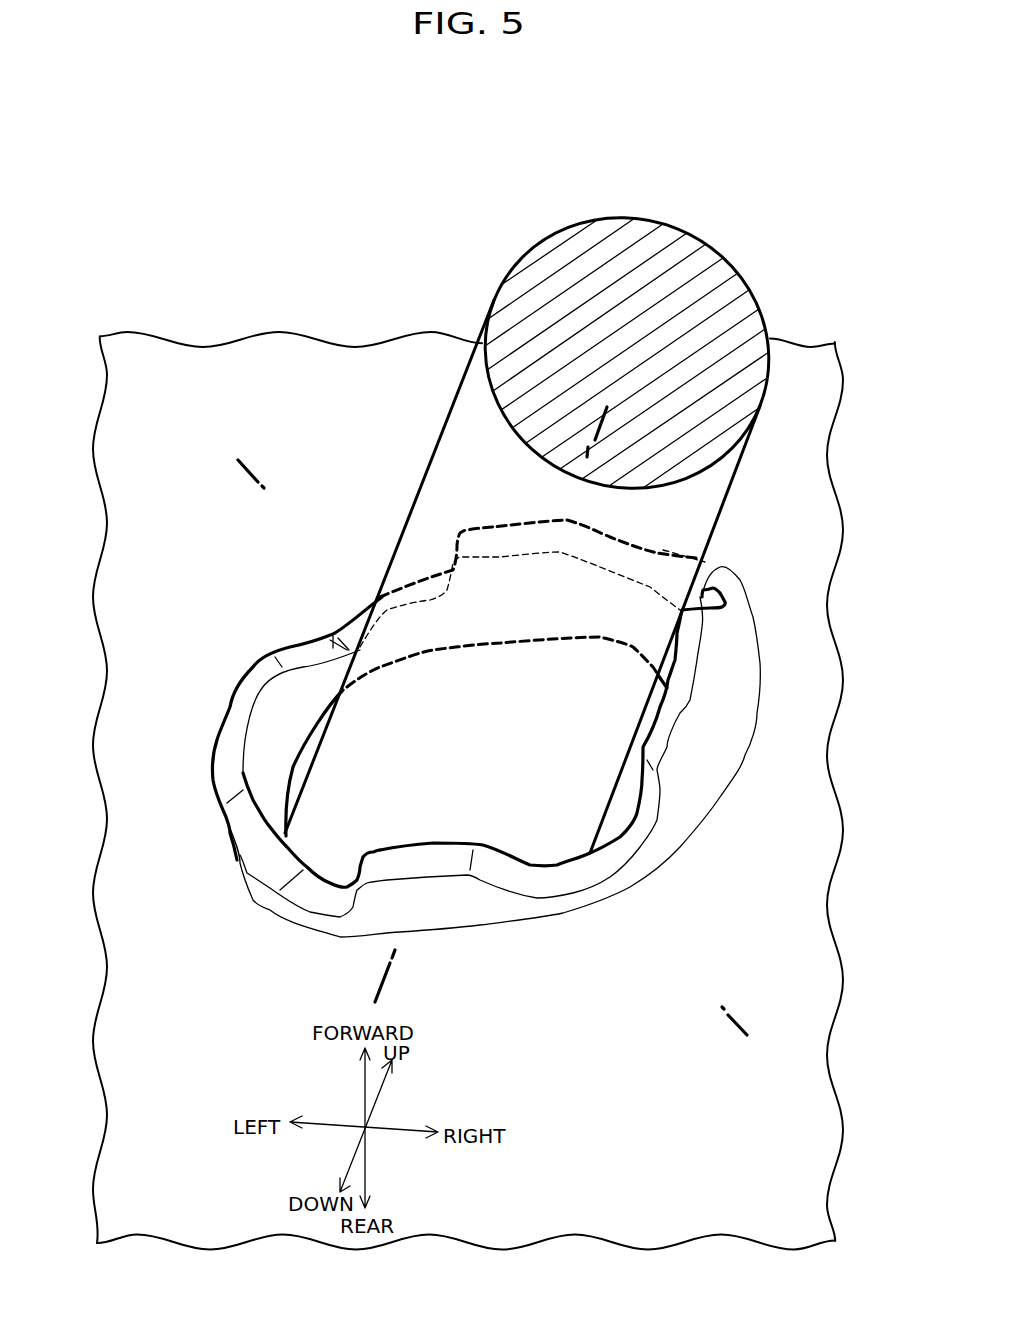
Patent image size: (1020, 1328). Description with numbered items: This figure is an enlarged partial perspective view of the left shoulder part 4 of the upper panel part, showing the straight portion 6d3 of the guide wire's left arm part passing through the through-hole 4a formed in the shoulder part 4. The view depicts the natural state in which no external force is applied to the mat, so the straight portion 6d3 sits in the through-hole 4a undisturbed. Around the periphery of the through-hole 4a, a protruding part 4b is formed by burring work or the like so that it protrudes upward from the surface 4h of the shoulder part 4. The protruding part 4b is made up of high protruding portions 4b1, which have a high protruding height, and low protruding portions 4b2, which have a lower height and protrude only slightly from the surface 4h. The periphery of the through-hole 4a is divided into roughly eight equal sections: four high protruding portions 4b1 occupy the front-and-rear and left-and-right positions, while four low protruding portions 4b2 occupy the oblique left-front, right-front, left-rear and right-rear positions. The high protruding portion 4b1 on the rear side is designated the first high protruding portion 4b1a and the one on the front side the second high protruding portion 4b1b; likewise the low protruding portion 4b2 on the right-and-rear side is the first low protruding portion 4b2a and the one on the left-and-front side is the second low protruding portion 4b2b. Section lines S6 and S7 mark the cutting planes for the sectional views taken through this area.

The straight portion 6d3 is at (488, 318).
The surface 4h is at (434, 791).
The left shoulder part 4 is at (142, 947).
The through-hole 4a is at (348, 598).
The protruding part 4b is at (227, 707).
The high protruding portion 4b1 is at (218, 747).
The first high protruding portion 4b1a is at (433, 890).
The second high protruding portion 4b1b is at (493, 525).
The low protruding portion 4b2 is at (703, 597).
The first low protruding portion 4b2a is at (605, 872).
The second low protruding portion 4b2b is at (333, 635).
The cross section line S6 is at (588, 427).
The cross section line S7 is at (238, 478).